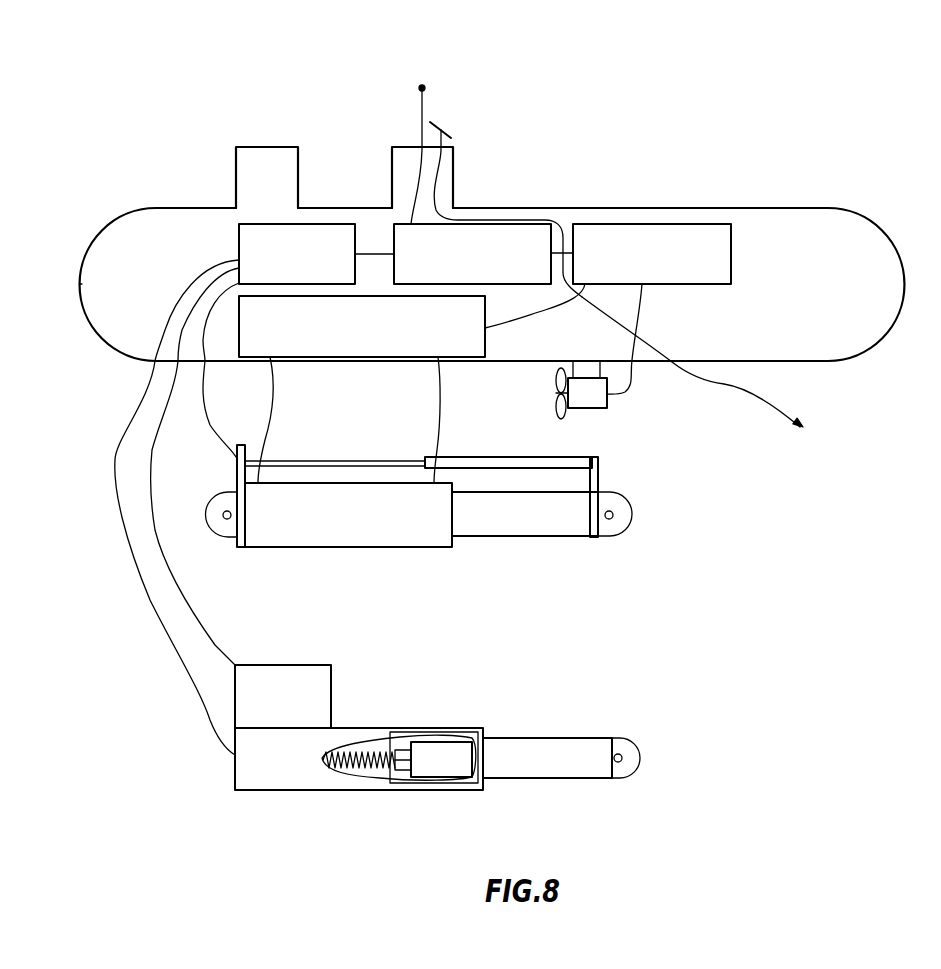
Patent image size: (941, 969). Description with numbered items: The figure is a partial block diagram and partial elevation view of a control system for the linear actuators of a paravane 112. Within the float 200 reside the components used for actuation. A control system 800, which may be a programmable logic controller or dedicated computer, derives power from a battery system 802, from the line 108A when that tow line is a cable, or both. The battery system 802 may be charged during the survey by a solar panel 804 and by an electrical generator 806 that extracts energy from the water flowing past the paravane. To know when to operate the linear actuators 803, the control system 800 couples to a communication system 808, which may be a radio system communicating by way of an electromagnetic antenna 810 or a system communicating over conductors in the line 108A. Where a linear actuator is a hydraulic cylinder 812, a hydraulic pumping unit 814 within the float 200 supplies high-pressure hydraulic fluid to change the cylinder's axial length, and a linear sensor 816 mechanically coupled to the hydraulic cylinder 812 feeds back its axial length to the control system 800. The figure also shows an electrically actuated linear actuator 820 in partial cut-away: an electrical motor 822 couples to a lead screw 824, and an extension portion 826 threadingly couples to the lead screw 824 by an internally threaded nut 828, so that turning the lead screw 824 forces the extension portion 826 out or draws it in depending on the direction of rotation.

The paravane 112 is at (608, 143).
The float 200 is at (855, 212).
The control system 800 is at (238, 238).
The battery system 802 is at (678, 224).
The linear actuator 803 is at (394, 555).
The solar panel 804 is at (433, 121).
The electrical generator 806 is at (607, 400).
The communication system 808 is at (498, 224).
The electromagnetic antenna 810 is at (424, 87).
The hydraulic cylinder 812 is at (437, 548).
The hydraulic pumping unit 814 is at (393, 357).
The linear sensor 816 is at (557, 458).
The electrically actuated linear actuator 820 is at (453, 730).
The electrical motor 822 is at (331, 690).
The lead screw 824 is at (378, 752).
The extension portion 826 is at (583, 738).
The internally threaded nut 828 is at (400, 772).
The tow line 108A is at (755, 372).